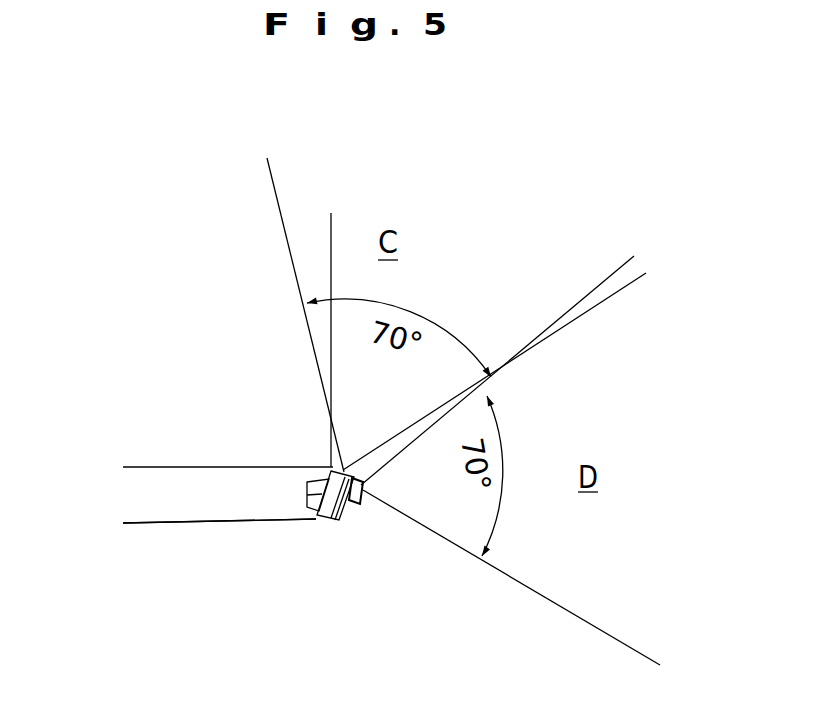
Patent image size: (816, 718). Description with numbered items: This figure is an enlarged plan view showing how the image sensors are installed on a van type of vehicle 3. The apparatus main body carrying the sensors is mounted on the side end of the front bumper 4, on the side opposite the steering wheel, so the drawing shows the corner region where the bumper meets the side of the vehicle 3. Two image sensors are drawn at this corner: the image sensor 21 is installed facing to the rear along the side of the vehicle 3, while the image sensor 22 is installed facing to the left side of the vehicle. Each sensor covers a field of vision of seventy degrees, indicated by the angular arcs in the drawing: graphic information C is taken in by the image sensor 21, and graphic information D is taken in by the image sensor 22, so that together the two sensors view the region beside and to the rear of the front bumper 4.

The vehicle 3 is at (237, 430).
The front bumper 4 is at (238, 505).
The image sensor 21 is at (322, 523).
The image sensor 22 is at (352, 500).